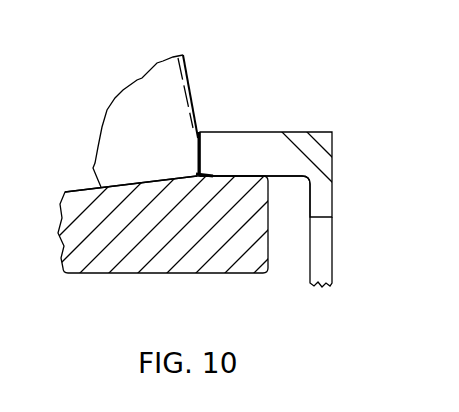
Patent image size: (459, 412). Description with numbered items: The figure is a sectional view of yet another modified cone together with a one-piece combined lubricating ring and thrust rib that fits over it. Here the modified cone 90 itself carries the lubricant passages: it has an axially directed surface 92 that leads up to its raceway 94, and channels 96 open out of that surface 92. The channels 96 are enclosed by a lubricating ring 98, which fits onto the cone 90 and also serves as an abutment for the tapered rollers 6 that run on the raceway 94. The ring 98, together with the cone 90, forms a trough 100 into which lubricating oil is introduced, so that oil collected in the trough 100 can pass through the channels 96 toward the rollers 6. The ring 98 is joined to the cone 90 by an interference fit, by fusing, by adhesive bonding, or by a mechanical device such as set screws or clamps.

The tapered rollers 6 is at (133, 120).
The modified cone 90 is at (197, 257).
The axially directed surface 92 is at (219, 176).
The raceway 94 is at (122, 180).
The channels 96 is at (247, 176).
The lubricating ring 98 is at (302, 137).
The trough 100 is at (283, 195).